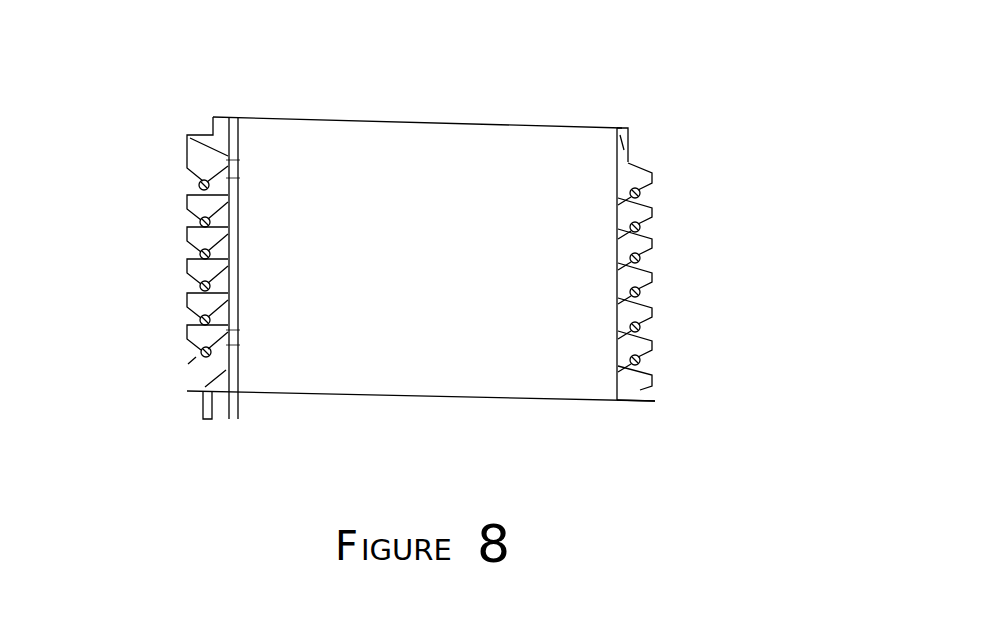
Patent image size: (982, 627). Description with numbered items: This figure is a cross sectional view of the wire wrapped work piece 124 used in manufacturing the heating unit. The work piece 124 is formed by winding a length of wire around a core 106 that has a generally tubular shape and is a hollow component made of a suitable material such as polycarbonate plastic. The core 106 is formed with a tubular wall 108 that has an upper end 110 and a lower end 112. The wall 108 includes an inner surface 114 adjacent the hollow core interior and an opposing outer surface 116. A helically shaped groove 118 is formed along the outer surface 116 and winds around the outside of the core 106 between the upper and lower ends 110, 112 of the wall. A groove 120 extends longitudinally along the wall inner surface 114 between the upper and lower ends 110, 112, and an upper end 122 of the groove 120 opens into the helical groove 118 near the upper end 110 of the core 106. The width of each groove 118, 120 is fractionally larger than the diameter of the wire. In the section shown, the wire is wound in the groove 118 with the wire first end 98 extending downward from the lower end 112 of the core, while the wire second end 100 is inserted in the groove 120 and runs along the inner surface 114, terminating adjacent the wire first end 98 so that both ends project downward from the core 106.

The wire first end 98 is at (237, 417).
The wire second end 100 is at (205, 405).
The core 106 is at (633, 150).
The tubular wall 108 is at (197, 140).
The upper end 110 is at (623, 127).
The lower end 112 is at (627, 403).
The inner surface 114 is at (618, 325).
The outer surface 116 is at (197, 272).
The helically shaped groove 118 is at (640, 233).
The groove 120 is at (231, 340).
The upper end of the groove 122 is at (237, 178).
The work piece 124 is at (684, 334).